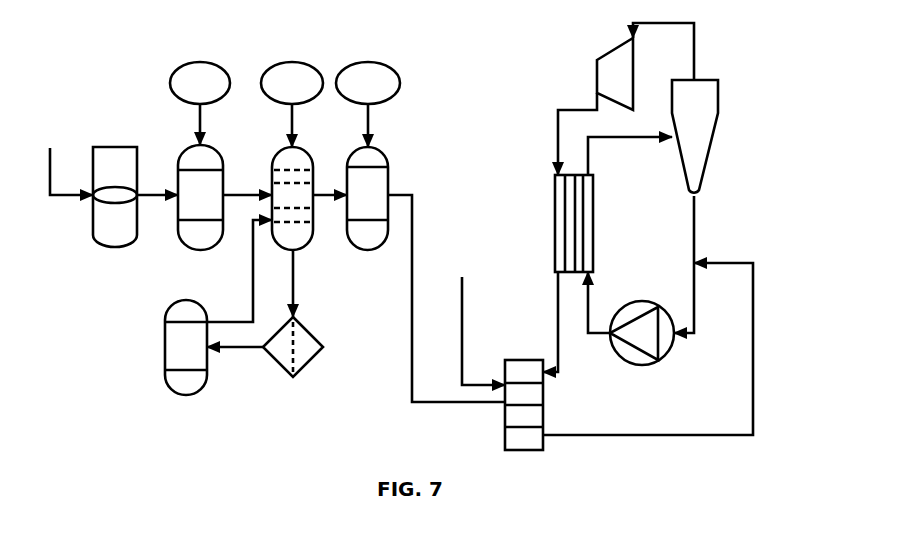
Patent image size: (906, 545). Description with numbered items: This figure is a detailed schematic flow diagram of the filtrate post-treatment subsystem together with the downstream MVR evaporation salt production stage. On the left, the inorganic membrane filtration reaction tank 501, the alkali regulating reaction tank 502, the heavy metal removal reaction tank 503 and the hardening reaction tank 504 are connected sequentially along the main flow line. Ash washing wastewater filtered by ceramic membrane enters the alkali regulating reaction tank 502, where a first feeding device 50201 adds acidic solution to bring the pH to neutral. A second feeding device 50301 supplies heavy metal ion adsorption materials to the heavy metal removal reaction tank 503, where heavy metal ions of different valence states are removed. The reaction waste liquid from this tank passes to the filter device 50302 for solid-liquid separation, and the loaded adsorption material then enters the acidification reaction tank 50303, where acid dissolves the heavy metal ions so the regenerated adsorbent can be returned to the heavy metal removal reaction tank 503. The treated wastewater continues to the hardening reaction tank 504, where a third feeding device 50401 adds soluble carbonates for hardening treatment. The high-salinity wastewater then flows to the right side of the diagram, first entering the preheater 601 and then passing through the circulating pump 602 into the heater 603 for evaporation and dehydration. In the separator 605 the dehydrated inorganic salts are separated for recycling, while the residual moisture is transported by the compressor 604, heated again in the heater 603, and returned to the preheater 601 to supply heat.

The inorganic membrane filtration reaction tank 501 is at (93, 186).
The alkali regulating reaction tank 502 is at (179, 187).
The first feeding device 50201 is at (195, 89).
The heavy metal removal reaction tank 503 is at (268, 187).
The second feeding device 50301 is at (290, 90).
The filter device 50302 is at (321, 313).
The acidification reaction tank 50303 is at (202, 307).
The hardening reaction tank 504 is at (406, 263).
The third feeding device 50401 is at (366, 90).
The preheater 601 is at (607, 356).
The circulating pump 602 is at (644, 313).
The heater 603 is at (587, 254).
The compressor 604 is at (626, 97).
The separator 605 is at (722, 206).